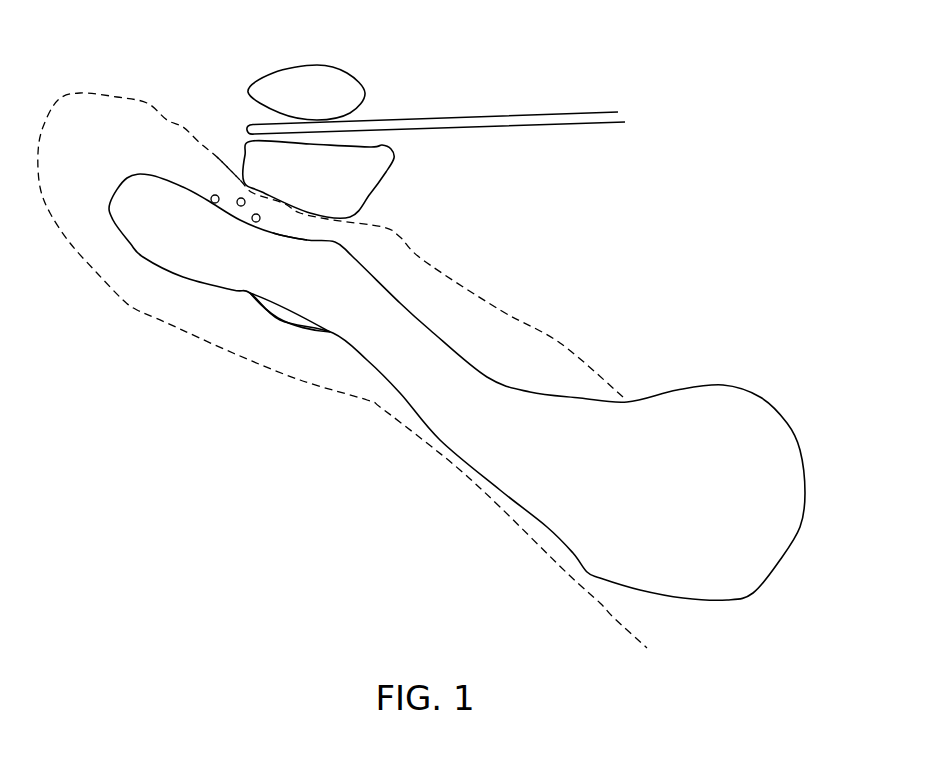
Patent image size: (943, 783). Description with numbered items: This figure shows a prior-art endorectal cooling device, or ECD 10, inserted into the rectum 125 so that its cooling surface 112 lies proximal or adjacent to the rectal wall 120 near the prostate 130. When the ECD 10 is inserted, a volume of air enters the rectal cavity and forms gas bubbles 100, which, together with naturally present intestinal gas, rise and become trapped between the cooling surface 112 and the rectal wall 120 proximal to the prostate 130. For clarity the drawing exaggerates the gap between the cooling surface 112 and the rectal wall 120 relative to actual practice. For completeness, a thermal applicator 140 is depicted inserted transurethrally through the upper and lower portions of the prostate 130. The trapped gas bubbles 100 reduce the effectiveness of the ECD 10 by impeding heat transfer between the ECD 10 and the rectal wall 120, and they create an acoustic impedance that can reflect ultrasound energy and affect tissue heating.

The endorectal cooling device 10 is at (521, 441).
The gas bubbles 100 is at (197, 185).
The cooling surface 112 is at (293, 223).
The rectal wall 120 is at (234, 162).
The rectum 125 is at (73, 159).
The prostate 130 is at (302, 104).
The thermal applicator 140 is at (500, 97).